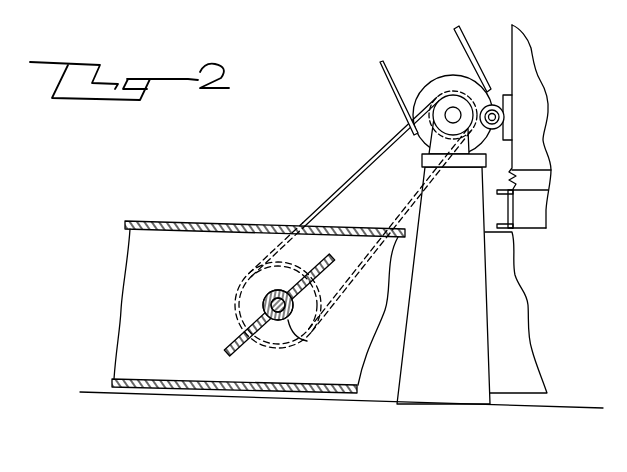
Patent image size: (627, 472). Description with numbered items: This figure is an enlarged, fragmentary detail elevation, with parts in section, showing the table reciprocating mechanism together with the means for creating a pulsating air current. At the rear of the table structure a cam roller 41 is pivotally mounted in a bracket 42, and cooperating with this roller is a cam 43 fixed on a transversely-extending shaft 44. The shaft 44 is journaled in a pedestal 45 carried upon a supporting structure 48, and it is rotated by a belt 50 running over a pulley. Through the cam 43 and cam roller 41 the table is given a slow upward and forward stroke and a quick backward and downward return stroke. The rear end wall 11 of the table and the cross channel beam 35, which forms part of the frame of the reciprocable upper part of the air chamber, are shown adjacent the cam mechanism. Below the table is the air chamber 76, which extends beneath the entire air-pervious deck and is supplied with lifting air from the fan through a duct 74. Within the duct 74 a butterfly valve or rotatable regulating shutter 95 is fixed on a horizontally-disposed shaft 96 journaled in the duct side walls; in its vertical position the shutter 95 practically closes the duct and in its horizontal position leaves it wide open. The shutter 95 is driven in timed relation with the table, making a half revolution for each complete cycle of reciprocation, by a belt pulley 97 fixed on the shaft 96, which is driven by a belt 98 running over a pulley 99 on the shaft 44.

The rear end wall 11 is at (511, 50).
The cross channel beam 35 is at (508, 209).
The cam roller 41 is at (484, 93).
The bracket 42 is at (500, 114).
The cam 43 is at (458, 90).
The shaft 44 is at (446, 114).
The pedestal 45 is at (462, 153).
The supporting structure 48 is at (472, 307).
The belt 50 is at (461, 37).
The duct 74 is at (180, 223).
The air chamber 76 is at (527, 375).
The butterfly valve or rotatable regulating shutter 95 is at (236, 341).
The shaft 96 is at (303, 341).
The belt pulley 97 is at (246, 299).
The belt 98 is at (336, 191).
The pulley 99 is at (415, 133).